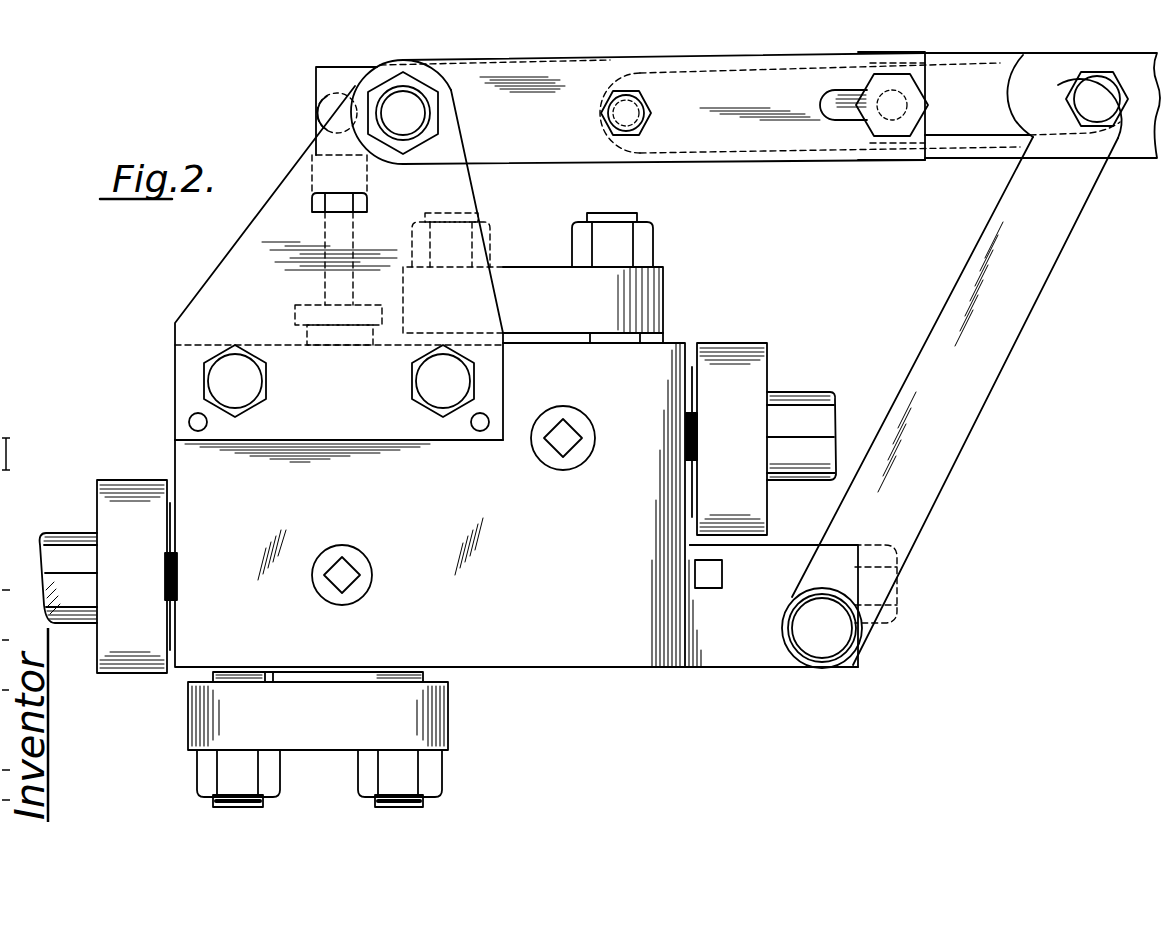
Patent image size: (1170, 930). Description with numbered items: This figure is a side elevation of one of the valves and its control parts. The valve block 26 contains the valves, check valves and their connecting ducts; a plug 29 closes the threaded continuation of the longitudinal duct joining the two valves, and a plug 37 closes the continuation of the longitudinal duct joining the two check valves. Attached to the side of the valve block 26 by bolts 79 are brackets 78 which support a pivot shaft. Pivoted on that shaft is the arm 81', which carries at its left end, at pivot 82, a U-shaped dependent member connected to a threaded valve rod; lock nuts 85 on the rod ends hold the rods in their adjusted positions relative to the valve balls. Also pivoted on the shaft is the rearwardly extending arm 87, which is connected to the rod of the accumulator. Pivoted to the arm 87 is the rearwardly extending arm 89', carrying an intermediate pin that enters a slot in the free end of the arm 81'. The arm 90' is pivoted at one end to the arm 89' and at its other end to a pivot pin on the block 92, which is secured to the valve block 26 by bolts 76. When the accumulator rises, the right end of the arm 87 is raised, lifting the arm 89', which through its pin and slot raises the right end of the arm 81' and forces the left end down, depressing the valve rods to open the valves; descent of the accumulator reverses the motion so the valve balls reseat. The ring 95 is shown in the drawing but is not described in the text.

The valve block 26 is at (183, 468).
The plug 29 is at (358, 583).
The plug 37 is at (572, 458).
The bolts 76 is at (394, 108).
The brackets 78 is at (215, 268).
The bolts 79 is at (415, 380).
The arm 81' is at (346, 93).
The pivot 82 is at (327, 112).
The lock nuts 85 is at (310, 203).
The rearwardly extending arm 87 is at (957, 58).
The rearwardly extending arm 89' is at (810, 129).
The arm 90' is at (960, 347).
The block 92 is at (774, 620).
The ring 95 is at (823, 630).